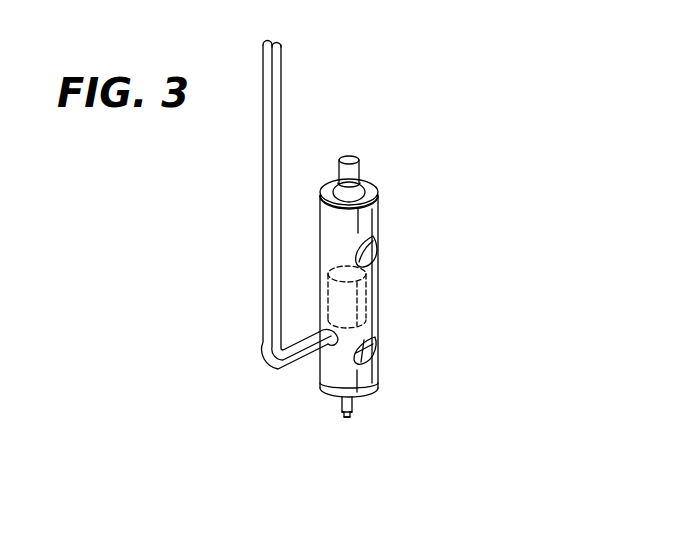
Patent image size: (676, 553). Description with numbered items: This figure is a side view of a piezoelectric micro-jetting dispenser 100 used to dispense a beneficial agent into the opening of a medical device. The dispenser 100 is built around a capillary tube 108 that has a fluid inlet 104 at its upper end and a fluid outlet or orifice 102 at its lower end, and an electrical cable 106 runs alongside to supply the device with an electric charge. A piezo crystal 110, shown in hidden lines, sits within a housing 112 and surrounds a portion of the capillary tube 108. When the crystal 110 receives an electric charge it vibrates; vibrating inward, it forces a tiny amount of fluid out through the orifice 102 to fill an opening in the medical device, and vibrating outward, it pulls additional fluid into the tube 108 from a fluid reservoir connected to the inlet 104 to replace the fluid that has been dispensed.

The piezoelectric micro-jetting dispenser 100 is at (446, 226).
The fluid outlet or orifice 102 is at (350, 418).
The fluid inlet 104 is at (358, 158).
The electrical cable 106 is at (262, 153).
The capillary tube 108 is at (353, 405).
The piezo crystal 110 is at (371, 292).
The housing 112 is at (385, 212).